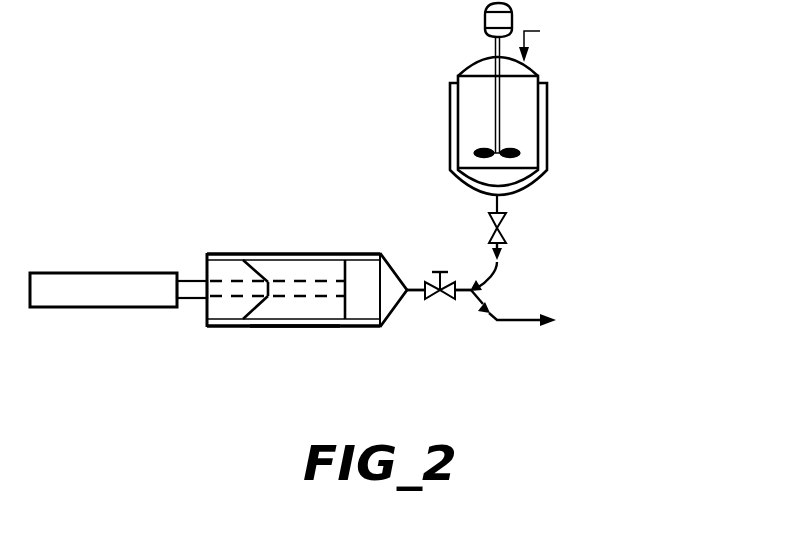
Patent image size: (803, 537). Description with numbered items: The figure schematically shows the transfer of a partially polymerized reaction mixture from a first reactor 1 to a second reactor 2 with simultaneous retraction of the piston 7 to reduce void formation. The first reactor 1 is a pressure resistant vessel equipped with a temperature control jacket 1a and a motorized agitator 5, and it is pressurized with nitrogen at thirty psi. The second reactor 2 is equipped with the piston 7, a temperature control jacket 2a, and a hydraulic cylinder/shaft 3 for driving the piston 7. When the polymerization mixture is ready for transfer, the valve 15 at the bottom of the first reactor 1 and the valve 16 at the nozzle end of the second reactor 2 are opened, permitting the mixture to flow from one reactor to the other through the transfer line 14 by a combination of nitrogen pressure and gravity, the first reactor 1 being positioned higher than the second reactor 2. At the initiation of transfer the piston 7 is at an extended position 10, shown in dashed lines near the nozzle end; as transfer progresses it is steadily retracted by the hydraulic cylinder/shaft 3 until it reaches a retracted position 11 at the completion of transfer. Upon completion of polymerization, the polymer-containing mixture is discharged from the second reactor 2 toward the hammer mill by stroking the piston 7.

The first reactor 1 is at (552, 120).
The temperature control jacket 1a is at (455, 138).
The second reactor 2 is at (352, 342).
The temperature control jacket 2a is at (298, 324).
The hydraulic cylinder/shaft 3 is at (122, 282).
The motorized agitator 5 is at (494, 22).
The piston 7 is at (362, 278).
The extended position 10 is at (342, 275).
The retracted position 11 is at (206, 268).
The transfer line 14 is at (488, 268).
The valve 15 is at (504, 227).
The valve 16 is at (445, 300).